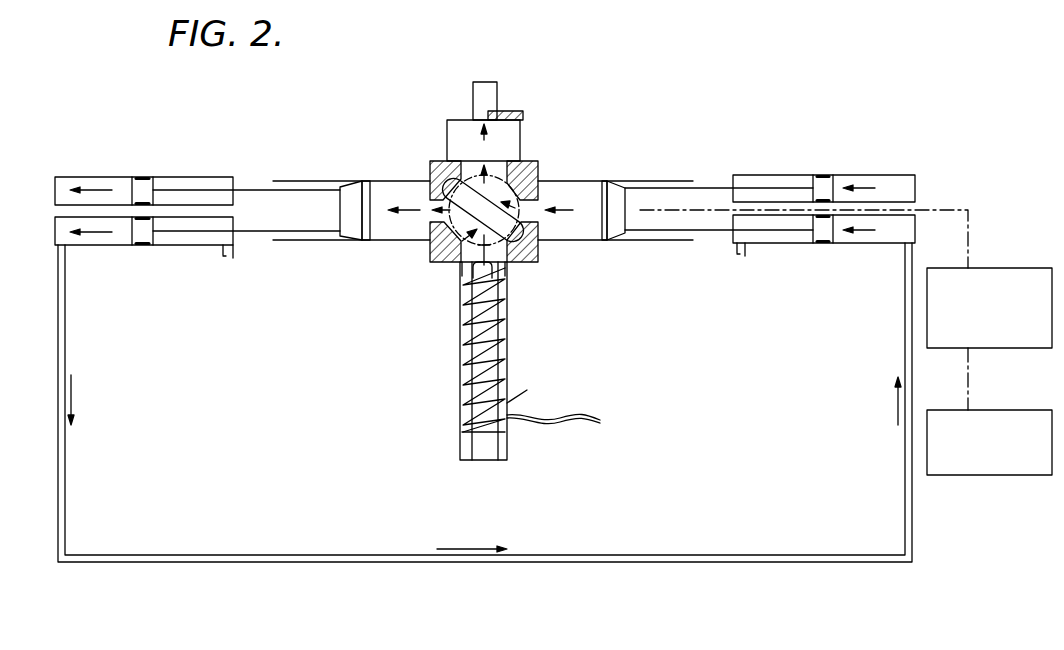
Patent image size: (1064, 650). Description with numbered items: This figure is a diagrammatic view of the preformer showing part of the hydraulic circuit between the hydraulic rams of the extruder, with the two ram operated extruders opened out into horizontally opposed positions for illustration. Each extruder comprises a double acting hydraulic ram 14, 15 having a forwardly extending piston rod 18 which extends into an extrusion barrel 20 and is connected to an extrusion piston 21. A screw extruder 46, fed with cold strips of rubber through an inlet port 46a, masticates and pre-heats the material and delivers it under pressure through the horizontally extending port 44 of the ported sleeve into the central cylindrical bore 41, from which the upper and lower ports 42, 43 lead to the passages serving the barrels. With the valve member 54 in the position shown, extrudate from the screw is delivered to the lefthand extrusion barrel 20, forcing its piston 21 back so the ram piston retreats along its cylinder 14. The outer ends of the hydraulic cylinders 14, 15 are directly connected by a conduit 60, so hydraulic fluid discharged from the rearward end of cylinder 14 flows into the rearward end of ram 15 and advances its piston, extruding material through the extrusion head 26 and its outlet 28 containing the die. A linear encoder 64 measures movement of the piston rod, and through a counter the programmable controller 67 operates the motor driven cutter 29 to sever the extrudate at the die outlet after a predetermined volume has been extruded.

The double acting hydraulic ram 14 is at (203, 177).
The double acting hydraulic ram 15 is at (881, 176).
The piston rod 18 is at (287, 197).
The extrusion barrel 20 is at (653, 181).
The extrusion piston 21 is at (349, 191).
The extrusion head 26 is at (510, 132).
The outlet 28 is at (474, 120).
The motor driven cutter 29 is at (508, 112).
The central cylindrical bore 41 is at (540, 167).
The upper port 42 is at (432, 201).
The lower port 43 is at (540, 205).
The horizontally extending port 44 is at (500, 268).
The screw extruder 46 is at (509, 338).
The inlet port 46a is at (508, 438).
The valve member 54 is at (512, 266).
The conduit 60 is at (66, 356).
The linear encoder 64 is at (1015, 252).
The programmable controller 67 is at (1005, 400).